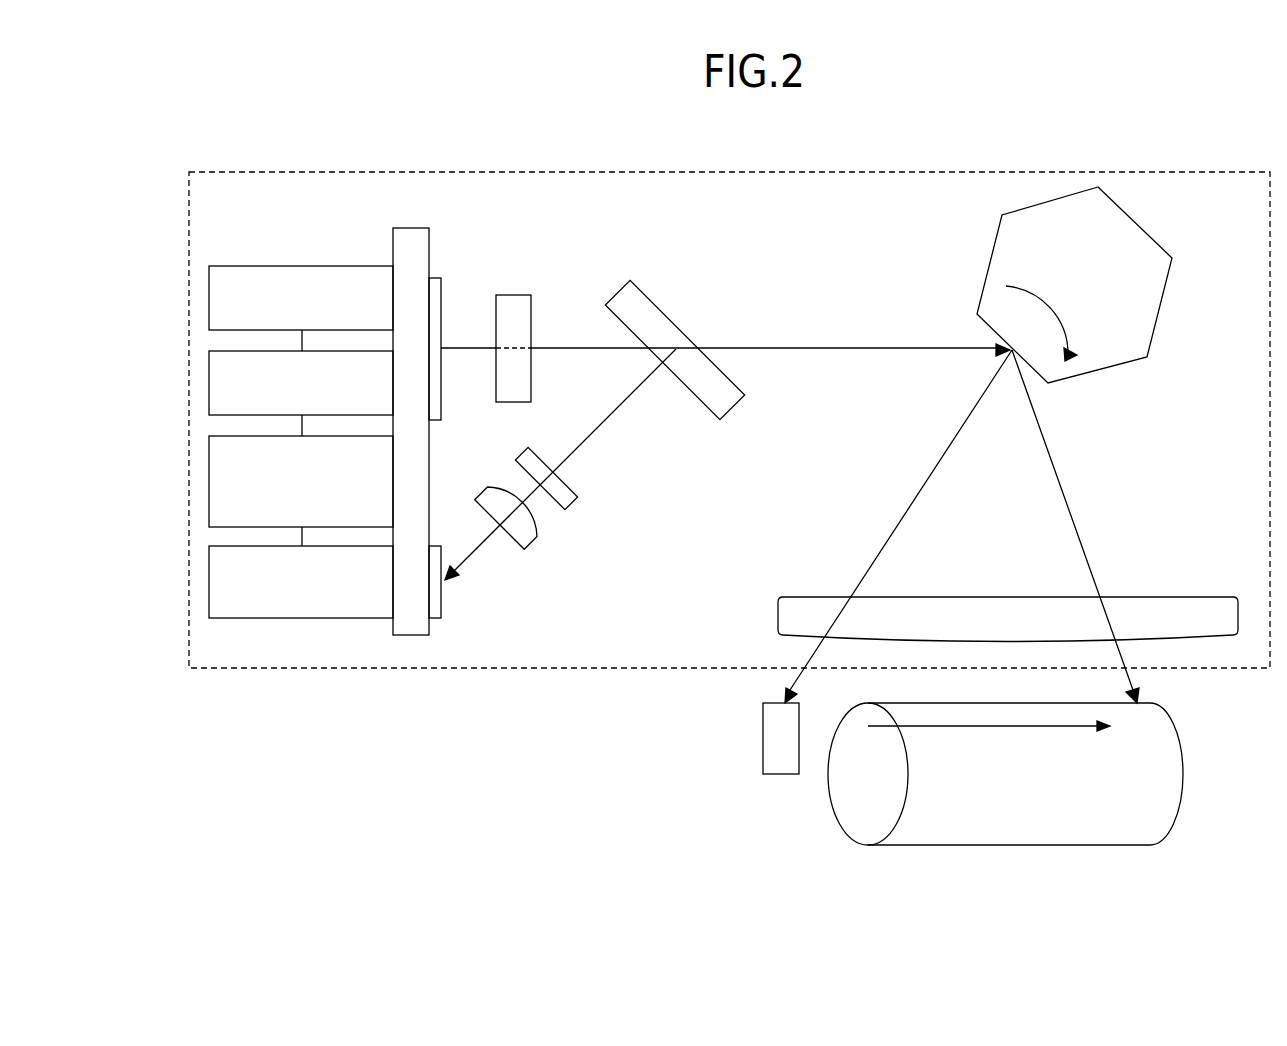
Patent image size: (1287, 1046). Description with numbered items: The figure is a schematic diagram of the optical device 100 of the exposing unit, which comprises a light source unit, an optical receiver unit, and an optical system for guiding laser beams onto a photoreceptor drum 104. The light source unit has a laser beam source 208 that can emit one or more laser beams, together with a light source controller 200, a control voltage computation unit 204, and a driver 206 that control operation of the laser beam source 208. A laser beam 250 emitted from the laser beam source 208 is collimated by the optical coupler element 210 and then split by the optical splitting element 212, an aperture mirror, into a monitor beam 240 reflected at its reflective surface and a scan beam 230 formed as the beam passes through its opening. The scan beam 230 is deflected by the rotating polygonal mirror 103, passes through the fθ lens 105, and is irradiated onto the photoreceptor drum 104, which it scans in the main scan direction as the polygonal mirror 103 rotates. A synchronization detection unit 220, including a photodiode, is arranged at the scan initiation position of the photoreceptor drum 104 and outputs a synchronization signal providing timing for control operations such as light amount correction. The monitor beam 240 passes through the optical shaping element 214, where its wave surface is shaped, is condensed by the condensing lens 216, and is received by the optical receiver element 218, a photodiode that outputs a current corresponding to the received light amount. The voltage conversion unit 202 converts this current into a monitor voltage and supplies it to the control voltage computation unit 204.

The optical device 100 is at (1226, 171).
The polygonal mirror 103 is at (1108, 371).
The photoreceptor drum 104 is at (1183, 772).
The fθ lens 105 is at (1183, 596).
The light source controller 200 is at (209, 392).
The voltage conversion unit 202 is at (209, 582).
The control voltage computation unit 204 is at (209, 487).
The driver 206 is at (209, 298).
The laser beam source 208 is at (437, 277).
The optical coupler element 210 is at (516, 294).
The optical splitting element 212 is at (640, 282).
The optical shaping element 214 is at (575, 505).
The condensing lens 216 is at (528, 548).
The optical receiver element 218 is at (441, 598).
The synchronization detection unit 220 is at (781, 776).
The scan beam 230 is at (832, 348).
The monitor beam 240 is at (617, 412).
The laser beam 250 is at (570, 348).